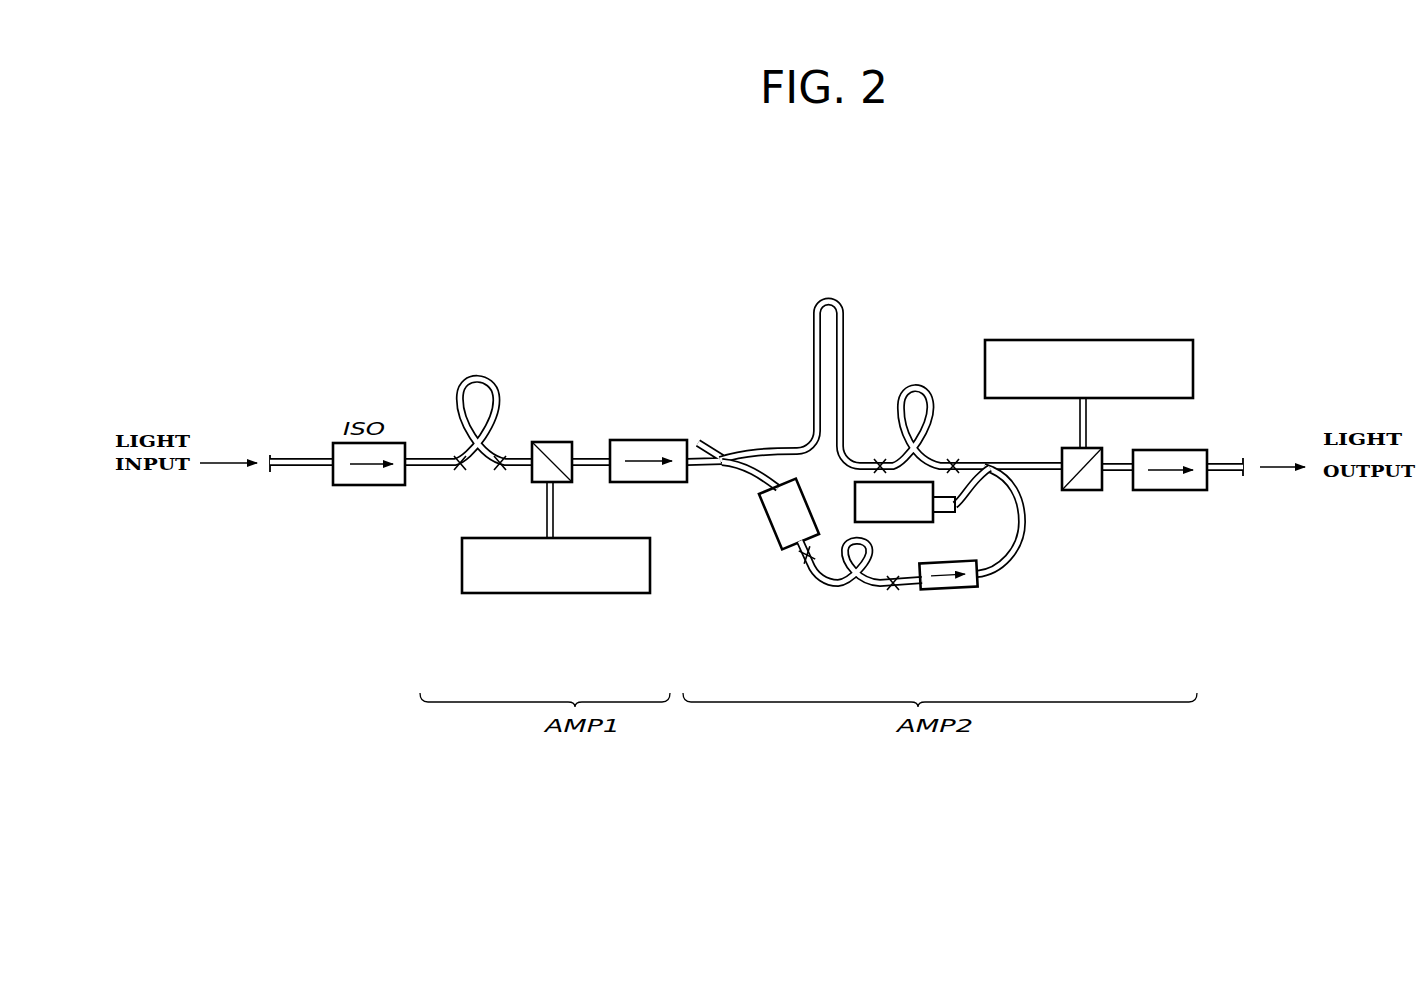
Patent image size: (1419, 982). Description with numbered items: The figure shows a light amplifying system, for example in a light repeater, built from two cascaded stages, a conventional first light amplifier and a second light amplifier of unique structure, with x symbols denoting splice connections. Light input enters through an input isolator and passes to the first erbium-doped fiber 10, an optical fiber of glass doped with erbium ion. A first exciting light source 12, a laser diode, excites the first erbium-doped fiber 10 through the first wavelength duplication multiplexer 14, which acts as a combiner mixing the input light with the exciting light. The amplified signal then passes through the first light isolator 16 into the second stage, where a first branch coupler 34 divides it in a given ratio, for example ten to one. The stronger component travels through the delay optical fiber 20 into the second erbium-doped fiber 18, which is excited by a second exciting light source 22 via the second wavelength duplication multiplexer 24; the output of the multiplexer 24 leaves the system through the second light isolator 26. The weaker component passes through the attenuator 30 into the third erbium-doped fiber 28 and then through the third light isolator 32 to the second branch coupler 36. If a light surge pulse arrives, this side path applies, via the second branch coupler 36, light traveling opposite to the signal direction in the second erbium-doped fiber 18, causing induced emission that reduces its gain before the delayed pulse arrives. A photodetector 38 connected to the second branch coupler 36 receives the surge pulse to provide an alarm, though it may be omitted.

The first erbium-doped fiber 10 is at (450, 403).
The first exciting light source 12 is at (650, 560).
The first wavelength duplication multiplexer 14 is at (534, 483).
The first light isolator 16 is at (630, 482).
The second erbium-doped fiber 18 is at (900, 382).
The delay optical fiber 20 is at (812, 323).
The second exciting light source 22 is at (1058, 340).
The second wavelength duplication multiplexer 24 is at (1095, 450).
The second light isolator 26 is at (1145, 490).
The third erbium-doped fiber 28 is at (808, 568).
The attenuator 30 is at (764, 527).
The third light isolator 32 is at (943, 590).
The first branch coupler 34 is at (710, 436).
The second branch coupler 36 is at (980, 462).
The photodetector 38 is at (877, 522).